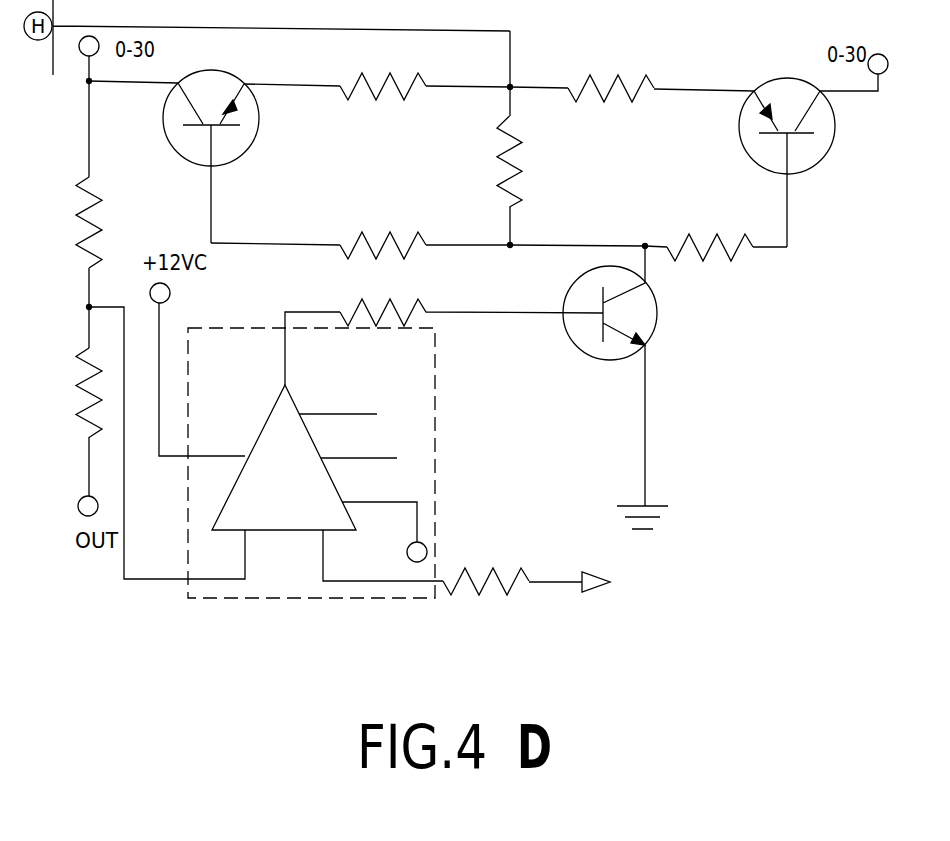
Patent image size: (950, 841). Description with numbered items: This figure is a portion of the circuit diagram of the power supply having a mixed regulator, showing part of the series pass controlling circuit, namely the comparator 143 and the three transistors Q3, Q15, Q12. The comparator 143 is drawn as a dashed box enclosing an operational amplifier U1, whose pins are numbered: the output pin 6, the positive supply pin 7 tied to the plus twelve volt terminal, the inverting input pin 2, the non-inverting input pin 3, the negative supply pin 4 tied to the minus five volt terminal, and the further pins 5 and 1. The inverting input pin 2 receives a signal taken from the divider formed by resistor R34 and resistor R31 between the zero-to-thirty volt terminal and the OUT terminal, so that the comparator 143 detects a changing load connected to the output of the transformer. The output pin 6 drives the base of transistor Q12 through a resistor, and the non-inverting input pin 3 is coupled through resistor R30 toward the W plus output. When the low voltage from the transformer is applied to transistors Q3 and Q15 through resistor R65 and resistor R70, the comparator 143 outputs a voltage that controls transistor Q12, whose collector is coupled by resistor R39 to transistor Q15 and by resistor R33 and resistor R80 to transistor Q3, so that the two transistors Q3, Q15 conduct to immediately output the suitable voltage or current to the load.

The comparator 143 is at (374, 478).
The operational amplifier U1 is at (284, 442).
The resistor R30 is at (486, 566).
The resistor R31 is at (66, 393).
The resistor R33 is at (383, 228).
The resistor R34 is at (114, 222).
The resistor R39 is at (710, 231).
The resistor R65 is at (383, 69).
The resistor R70 is at (611, 70).
The resistor R80 is at (537, 161).
The transistor Q3 is at (211, 156).
The transistor Q12 is at (640, 376).
The transistor Q15 is at (784, 144).
The op-amp pin 1 is at (359, 442).
The op-amp inverting input pin 2 is at (167, 443).
The op-amp non-inverting input pin 3 is at (375, 555).
The op-amp negative supply pin 4 is at (379, 506).
The op-amp pin 5 is at (338, 397).
The op-amp output pin 6 is at (312, 331).
The op-amp positive supply pin 7 is at (202, 379).